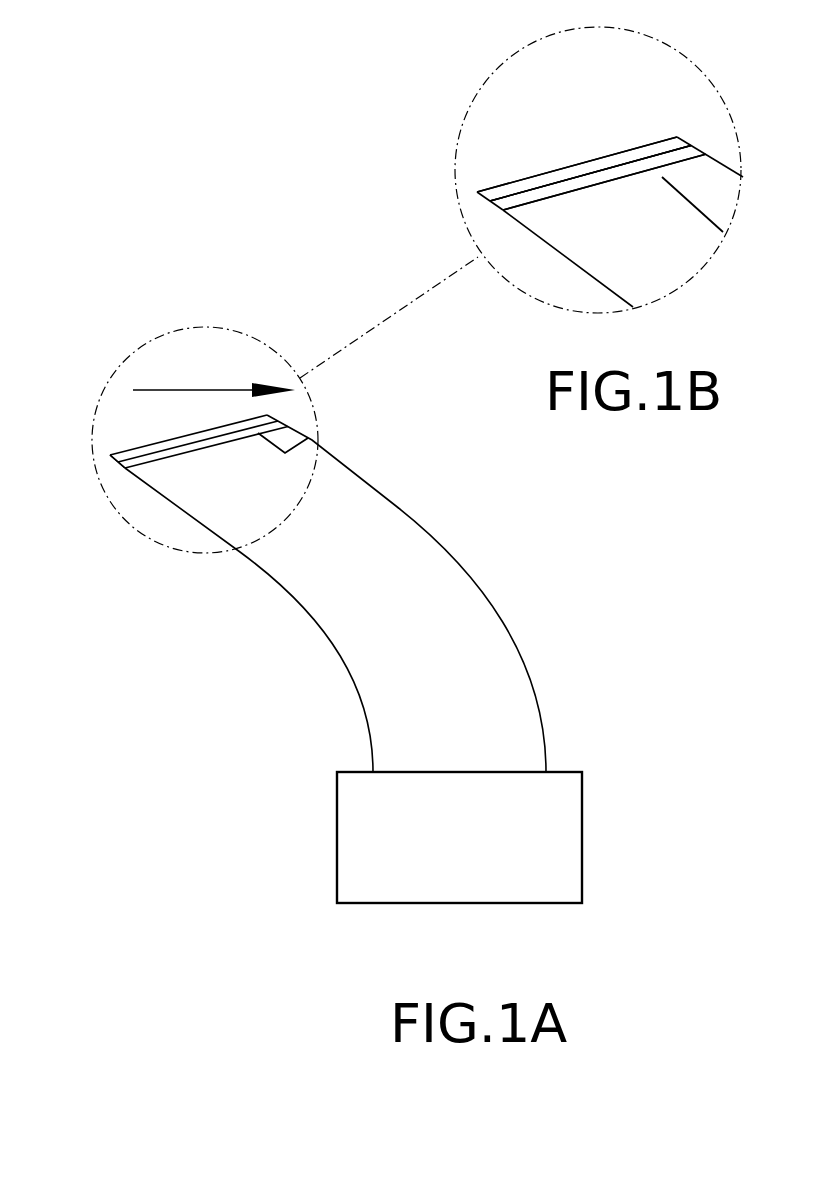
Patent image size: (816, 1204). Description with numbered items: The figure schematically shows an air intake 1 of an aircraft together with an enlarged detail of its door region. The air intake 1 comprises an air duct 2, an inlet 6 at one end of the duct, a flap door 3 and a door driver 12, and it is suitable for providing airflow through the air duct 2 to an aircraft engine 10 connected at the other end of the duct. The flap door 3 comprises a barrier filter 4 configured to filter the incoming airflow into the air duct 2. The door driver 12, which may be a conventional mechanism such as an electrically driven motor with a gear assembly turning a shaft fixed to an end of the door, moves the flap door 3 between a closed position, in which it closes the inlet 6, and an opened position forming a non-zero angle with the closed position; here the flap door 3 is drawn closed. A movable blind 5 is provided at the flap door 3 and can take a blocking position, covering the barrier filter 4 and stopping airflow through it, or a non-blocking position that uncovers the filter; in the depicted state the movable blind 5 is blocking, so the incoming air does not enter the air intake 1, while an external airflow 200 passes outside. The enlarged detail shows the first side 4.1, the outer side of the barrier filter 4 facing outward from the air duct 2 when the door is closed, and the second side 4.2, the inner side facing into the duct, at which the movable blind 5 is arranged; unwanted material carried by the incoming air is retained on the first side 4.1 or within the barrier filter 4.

In FIG. 1A, the air intake 1 is at (412, 659).
In FIG. 1A, the air duct 2 is at (378, 530).
In FIG. 1A, the flap door 3 is at (90, 492).
In FIG. 1A, the barrier filter 4 is at (130, 452).
In FIG. 1B, the barrier filter 4 is at (690, 152).
In FIG. 1B, the first side 4.1 is at (517, 152).
In FIG. 1B, the second side 4.2 is at (548, 210).
In FIG. 1A, the movable blind 5 is at (162, 460).
In FIG. 1B, the movable blind 5 is at (685, 140).
In FIG. 1A, the inlet 6 is at (150, 412).
In FIG. 1B, the inlet 6 is at (465, 157).
In FIG. 1A, the aircraft engine 10 is at (338, 806).
In FIG. 1A, the door driver 12 is at (283, 437).
In FIG. 1B, the door driver 12 is at (703, 188).
In FIG. 1A, the external airflow 200 is at (214, 371).